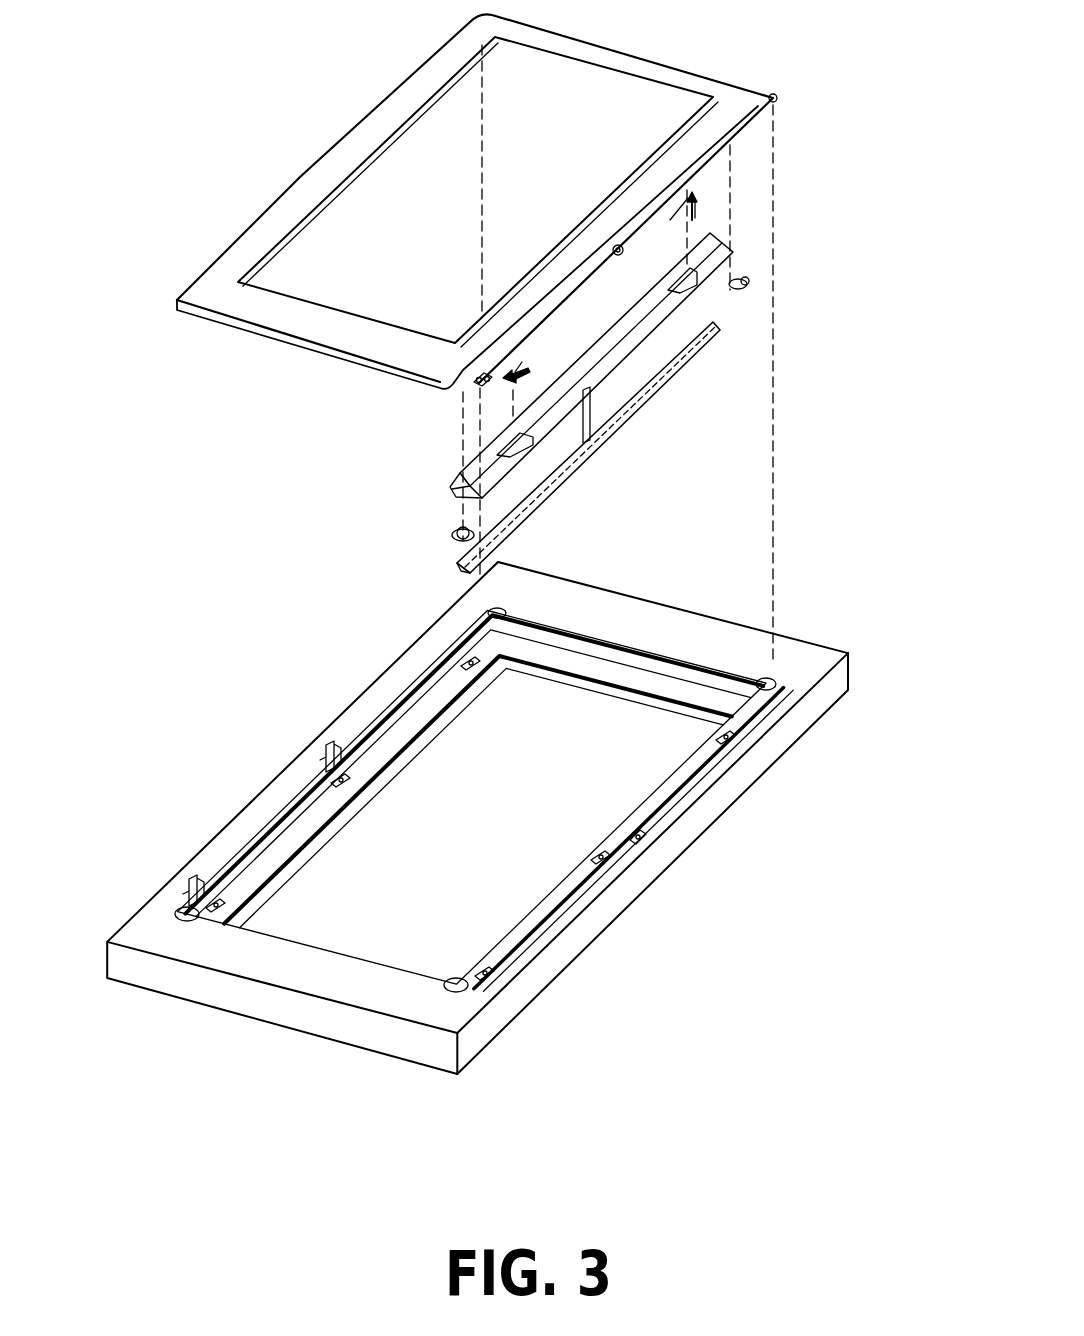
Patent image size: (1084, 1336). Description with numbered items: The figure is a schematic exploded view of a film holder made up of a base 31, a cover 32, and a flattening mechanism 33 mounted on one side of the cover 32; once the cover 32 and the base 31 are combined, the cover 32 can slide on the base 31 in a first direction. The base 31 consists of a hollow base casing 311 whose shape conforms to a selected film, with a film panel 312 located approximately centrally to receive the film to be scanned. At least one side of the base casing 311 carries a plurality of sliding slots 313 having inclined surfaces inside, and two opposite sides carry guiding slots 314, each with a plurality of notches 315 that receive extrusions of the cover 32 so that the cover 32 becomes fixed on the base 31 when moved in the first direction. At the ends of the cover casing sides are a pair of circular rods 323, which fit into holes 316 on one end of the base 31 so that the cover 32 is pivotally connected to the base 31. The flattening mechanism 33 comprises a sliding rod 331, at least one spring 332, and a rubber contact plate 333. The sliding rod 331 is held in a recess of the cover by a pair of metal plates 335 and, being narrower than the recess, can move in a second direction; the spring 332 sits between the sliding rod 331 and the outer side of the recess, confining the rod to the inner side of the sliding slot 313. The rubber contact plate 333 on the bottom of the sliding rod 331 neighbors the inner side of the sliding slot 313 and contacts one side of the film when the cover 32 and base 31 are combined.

The base 31 is at (512, 826).
The base casing 311 is at (799, 722).
The film panel 312 is at (604, 672).
The sliding slots 313 is at (480, 668).
The guiding slots 314 is at (300, 803).
The notches 315 is at (634, 846).
The holes 316 is at (775, 690).
The cover 32 is at (290, 120).
The circular rods 323 is at (776, 100).
The flattening mechanism 33 is at (549, 377).
The sliding rod 331 is at (755, 253).
The spring 332 is at (700, 197).
The contact plate 333 is at (722, 328).
The metal plates 335 is at (750, 283).